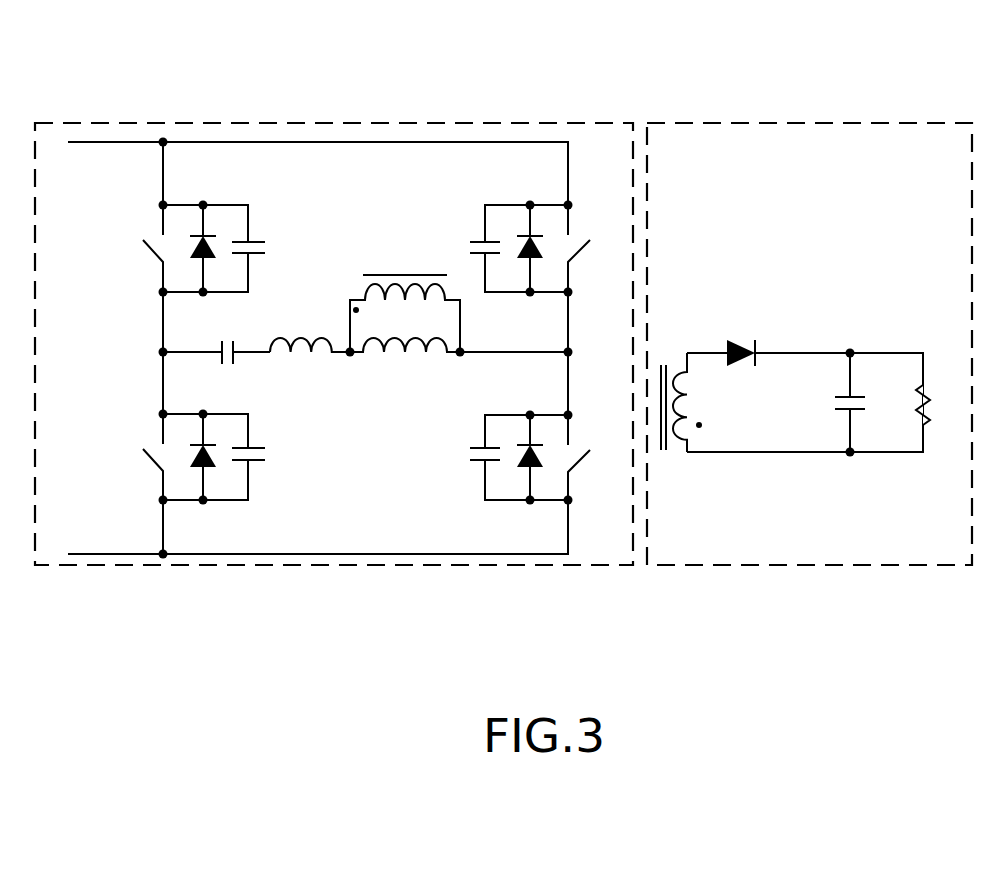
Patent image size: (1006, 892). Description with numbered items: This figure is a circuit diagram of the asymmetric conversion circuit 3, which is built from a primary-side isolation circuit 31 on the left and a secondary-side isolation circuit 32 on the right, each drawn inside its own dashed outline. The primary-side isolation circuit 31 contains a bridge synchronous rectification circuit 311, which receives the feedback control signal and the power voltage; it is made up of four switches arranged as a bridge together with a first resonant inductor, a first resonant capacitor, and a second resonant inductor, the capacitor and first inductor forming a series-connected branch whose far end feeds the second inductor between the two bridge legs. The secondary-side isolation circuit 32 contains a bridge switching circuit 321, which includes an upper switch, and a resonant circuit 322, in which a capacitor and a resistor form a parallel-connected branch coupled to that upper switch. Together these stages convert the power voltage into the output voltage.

The asymmetric conversion circuit 3 is at (481, 42).
The primary-side isolation circuit 31 is at (598, 146).
The secondary-side isolation circuit 32 is at (792, 152).
The bridge synchronous rectification circuit 311 is at (365, 512).
The bridge switching circuit 321 is at (737, 292).
The resonant circuit 322 is at (900, 474).